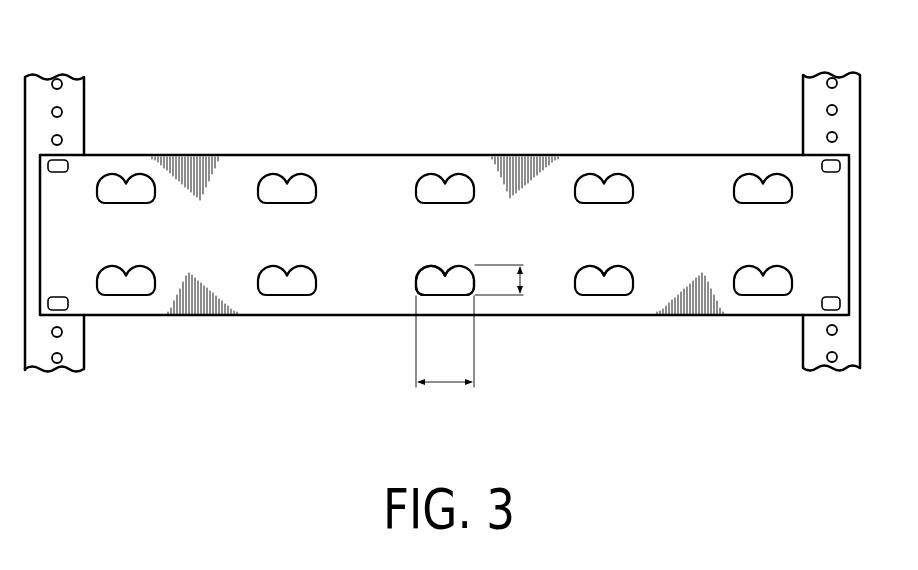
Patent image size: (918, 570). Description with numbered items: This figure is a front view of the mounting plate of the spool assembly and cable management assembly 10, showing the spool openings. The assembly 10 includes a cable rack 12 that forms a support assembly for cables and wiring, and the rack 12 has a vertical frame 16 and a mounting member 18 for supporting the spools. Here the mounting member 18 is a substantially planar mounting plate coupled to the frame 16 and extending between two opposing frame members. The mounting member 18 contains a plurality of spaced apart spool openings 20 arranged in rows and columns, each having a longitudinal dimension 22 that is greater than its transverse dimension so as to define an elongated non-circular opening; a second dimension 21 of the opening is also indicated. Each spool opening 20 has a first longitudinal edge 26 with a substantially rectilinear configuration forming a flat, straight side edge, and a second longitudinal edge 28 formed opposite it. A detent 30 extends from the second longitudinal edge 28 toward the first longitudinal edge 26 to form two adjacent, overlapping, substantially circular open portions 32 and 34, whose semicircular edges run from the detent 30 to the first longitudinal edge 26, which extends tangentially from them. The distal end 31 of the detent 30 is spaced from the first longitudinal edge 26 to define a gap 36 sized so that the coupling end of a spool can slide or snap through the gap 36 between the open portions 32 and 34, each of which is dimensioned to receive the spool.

The spool assembly and cable management assembly 10 is at (442, 215).
The cable rack 12 is at (92, 106).
The vertical frame 16 is at (84, 343).
The mounting member 18 is at (380, 155).
The spool opening 20 is at (253, 181).
The aperture height 21 is at (524, 282).
The longitudinal dimension 22 is at (445, 385).
The first longitudinal edge 26 is at (424, 292).
The second longitudinal edge 28 is at (422, 267).
The detent 30 is at (445, 265).
The distal end 31 is at (419, 274).
The open portion 32 is at (427, 283).
The open portion 34 is at (469, 283).
The gap 36 is at (445, 292).